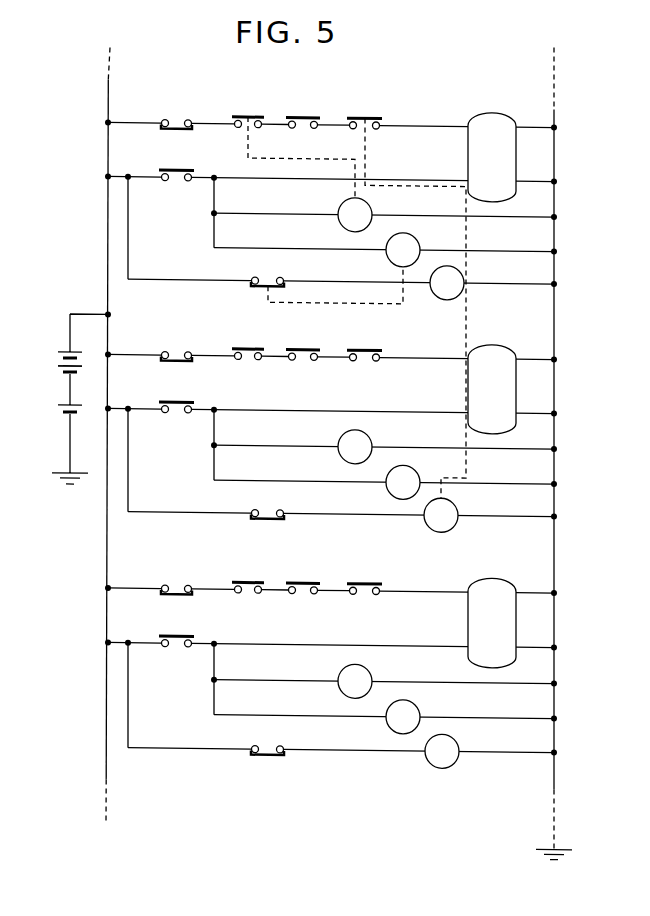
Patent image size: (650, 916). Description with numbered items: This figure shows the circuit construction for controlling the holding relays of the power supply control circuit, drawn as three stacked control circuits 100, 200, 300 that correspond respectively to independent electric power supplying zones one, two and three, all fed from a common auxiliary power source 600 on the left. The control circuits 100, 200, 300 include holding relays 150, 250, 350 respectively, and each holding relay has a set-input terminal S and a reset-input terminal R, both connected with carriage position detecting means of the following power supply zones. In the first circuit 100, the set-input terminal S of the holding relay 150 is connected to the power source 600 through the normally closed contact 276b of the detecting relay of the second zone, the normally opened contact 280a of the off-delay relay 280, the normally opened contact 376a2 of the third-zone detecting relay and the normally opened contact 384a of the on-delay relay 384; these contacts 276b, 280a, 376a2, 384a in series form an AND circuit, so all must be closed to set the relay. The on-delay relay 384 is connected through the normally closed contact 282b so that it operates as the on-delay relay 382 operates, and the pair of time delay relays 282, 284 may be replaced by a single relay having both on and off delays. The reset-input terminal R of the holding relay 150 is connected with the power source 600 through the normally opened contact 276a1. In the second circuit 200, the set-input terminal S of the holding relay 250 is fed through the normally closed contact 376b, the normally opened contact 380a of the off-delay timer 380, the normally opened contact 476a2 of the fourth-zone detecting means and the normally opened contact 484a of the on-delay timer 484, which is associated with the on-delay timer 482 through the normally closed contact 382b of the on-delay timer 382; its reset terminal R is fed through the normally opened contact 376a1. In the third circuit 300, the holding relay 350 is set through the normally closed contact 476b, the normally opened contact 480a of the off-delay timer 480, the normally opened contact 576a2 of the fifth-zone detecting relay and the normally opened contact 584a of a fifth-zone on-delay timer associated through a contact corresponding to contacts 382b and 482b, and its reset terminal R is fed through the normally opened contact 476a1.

The control circuit 100 is at (370, 295).
The control circuit 200 is at (372, 431).
The control circuit 300 is at (375, 662).
The holding relay 150 is at (479, 167).
The holding relay 250 is at (479, 399).
The holding relay 350 is at (479, 632).
The auxiliary power source 600 is at (68, 385).
The normally closed contact 276b is at (182, 112).
The normally opened contact 280a is at (250, 112).
The normally opened contact 376a2 is at (306, 112).
The normally opened contact 384a is at (370, 112).
The normally opened contact 276a1 is at (183, 163).
The normally closed contact 282b is at (270, 277).
The off-delay relay 280 is at (369, 204).
The time delay relay 282 is at (418, 238).
The time delay relay 284 is at (462, 272).
The normally closed contact 376b is at (182, 344).
The normally opened contact 380a is at (250, 344).
The normally opened contact 476a2 is at (306, 344).
The normally opened contact 484a is at (370, 344).
The normally opened contact 376a1 is at (183, 395).
The normally closed contact 382b is at (270, 510).
The off-delay timer 380 is at (369, 436).
The on-delay timer 382 is at (418, 470).
The on-delay relay 384 is at (456, 504).
The normally closed contact 476b is at (182, 578).
The normally opened contact 480a is at (250, 578).
The normally opened contact 576a2 is at (306, 578).
The normally opened contact 584a is at (370, 578).
The normally opened contact 476a1 is at (183, 629).
The normally closed contact 482b is at (270, 746).
The off-delay timer 480 is at (369, 670).
The on-delay timer 482 is at (418, 705).
The on-delay timer 484 is at (457, 740).
The set-input terminal S is at (435, 125).
The reset-input terminal R is at (453, 179).